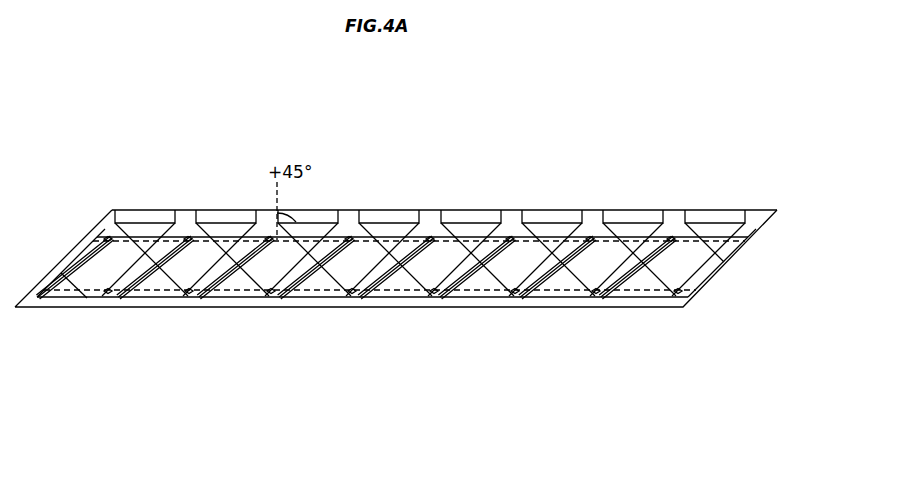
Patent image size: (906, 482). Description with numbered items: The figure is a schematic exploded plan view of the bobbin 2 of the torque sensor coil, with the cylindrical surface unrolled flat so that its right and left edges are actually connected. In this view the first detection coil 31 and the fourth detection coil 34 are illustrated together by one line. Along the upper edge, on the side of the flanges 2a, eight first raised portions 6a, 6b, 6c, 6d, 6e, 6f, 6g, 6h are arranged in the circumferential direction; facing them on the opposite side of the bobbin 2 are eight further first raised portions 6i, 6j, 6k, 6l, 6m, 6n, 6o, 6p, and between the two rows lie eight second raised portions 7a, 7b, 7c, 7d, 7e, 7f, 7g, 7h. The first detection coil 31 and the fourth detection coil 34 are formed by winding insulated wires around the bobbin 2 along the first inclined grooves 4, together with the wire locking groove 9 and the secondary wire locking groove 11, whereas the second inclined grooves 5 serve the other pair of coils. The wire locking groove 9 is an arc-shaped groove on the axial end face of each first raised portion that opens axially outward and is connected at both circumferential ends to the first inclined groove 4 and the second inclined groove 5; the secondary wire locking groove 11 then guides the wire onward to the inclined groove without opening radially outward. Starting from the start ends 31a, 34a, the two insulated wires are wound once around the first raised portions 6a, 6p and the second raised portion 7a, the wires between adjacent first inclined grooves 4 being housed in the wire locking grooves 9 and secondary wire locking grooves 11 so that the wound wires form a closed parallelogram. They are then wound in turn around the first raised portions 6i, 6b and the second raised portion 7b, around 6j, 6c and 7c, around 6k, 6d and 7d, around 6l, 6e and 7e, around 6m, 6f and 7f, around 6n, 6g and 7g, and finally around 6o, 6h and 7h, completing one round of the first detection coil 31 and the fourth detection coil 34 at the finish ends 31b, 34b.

The bobbin 2 is at (709, 298).
The flange 2a is at (692, 210).
The first inclined groove 4 is at (588, 227).
The second inclined groove 5 is at (452, 242).
The first raised portion 6a is at (153, 230).
The first raised portion 6b is at (225, 230).
The first raised portion 6c is at (325, 230).
The first raised portion 6d is at (393, 230).
The first raised portion 6e is at (477, 230).
The first raised portion 6f is at (555, 230).
The first raised portion 6g is at (632, 230).
The first raised portion 6h is at (718, 230).
The first raised portion 6i is at (143, 302).
The first raised portion 6j is at (242, 302).
The first raised portion 6k is at (313, 302).
The first raised portion 6l is at (395, 302).
The first raised portion 6m is at (470, 302).
The first raised portion 6n is at (543, 302).
The first raised portion 6o is at (635, 302).
The first raised portion 6p is at (60, 302).
The second raised portion 7a is at (110, 277).
The second raised portion 7b is at (191, 277).
The second raised portion 7c is at (273, 277).
The second raised portion 7d is at (354, 277).
The second raised portion 7e is at (436, 277).
The second raised portion 7f is at (517, 277).
The second raised portion 7g is at (598, 277).
The second raised portion 7h is at (682, 277).
The wire locking groove 9 is at (143, 235).
The secondary wire locking groove 11 is at (188, 226).
The first detection coil 31 is at (518, 227).
The fourth detection coil 34 is at (419, 192).
The start end 31a is at (112, 210).
The start end 34a is at (76, 220).
The finish end 31b is at (777, 210).
The finish end 34b is at (388, 220).